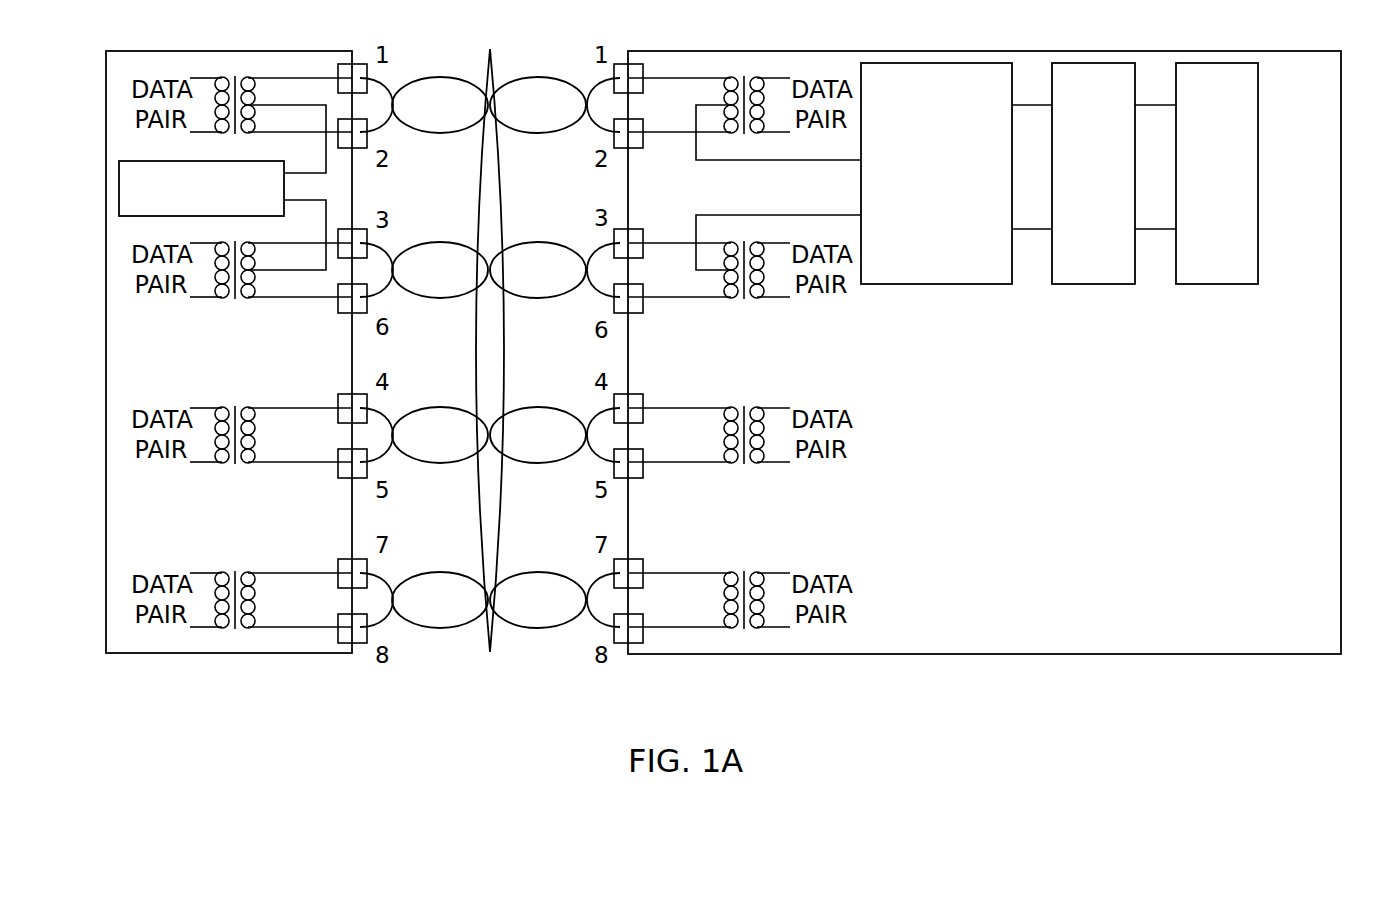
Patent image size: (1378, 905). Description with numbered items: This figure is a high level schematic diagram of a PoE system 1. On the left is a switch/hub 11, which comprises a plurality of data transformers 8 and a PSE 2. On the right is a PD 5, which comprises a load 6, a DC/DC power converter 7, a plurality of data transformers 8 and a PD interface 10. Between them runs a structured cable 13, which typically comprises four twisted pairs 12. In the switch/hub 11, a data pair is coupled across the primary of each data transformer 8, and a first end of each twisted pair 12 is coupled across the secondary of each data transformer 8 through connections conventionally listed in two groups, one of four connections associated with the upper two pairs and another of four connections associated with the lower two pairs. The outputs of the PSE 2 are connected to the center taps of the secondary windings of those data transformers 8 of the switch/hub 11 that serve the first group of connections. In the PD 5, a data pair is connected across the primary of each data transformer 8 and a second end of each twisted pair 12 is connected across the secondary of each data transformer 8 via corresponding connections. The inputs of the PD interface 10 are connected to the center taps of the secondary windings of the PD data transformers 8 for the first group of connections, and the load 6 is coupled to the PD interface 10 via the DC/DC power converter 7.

The PoE system 1 is at (470, 21).
The PSE 2 is at (119, 188).
The PD 5 is at (1012, 51).
The load 6 is at (1208, 284).
The DC/DC power converter 7 is at (1123, 284).
The data transformer 8 is at (248, 77).
The PD interface 10 is at (952, 284).
The switch/hub 11 is at (106, 107).
The twisted pair 12 is at (530, 133).
The structured cable 13 is at (490, 652).